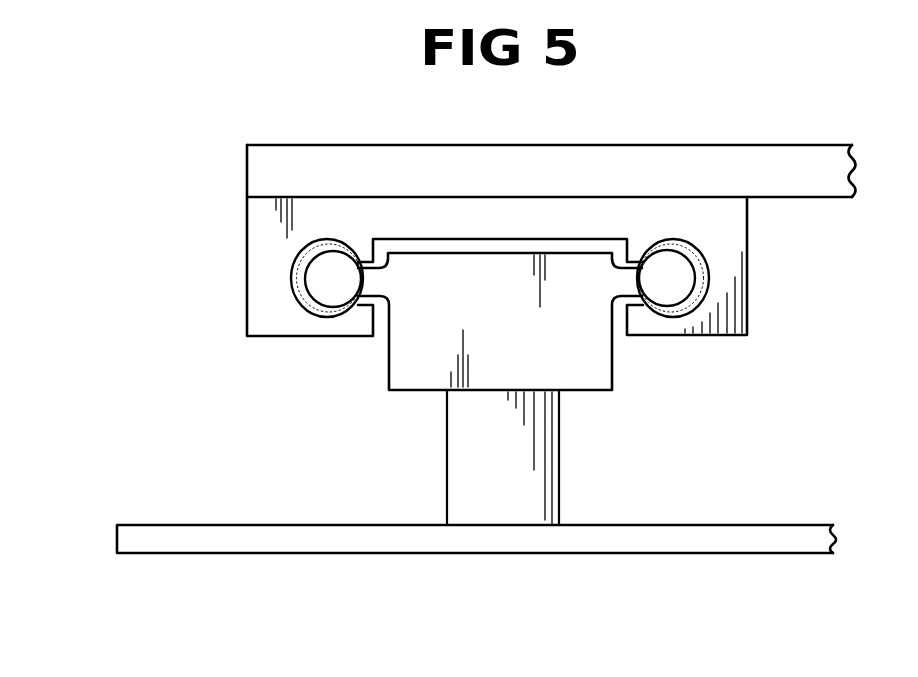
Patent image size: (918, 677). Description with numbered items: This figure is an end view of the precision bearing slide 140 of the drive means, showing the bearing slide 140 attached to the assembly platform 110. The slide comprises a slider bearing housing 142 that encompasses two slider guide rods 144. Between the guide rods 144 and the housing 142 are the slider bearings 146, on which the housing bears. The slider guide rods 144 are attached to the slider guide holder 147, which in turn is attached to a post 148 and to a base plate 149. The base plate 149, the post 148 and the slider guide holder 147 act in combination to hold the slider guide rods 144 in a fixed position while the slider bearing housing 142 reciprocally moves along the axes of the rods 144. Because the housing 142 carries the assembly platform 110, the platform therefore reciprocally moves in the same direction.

The assembly platform 110 is at (648, 148).
The precision bearing slide 140 is at (184, 262).
The slider bearing housing 142 is at (732, 233).
The slider guide rods 144 is at (327, 297).
The slider bearings 146 is at (293, 285).
The slider guide holder 147 is at (591, 378).
The post 148 is at (460, 477).
The base plate 149 is at (718, 525).